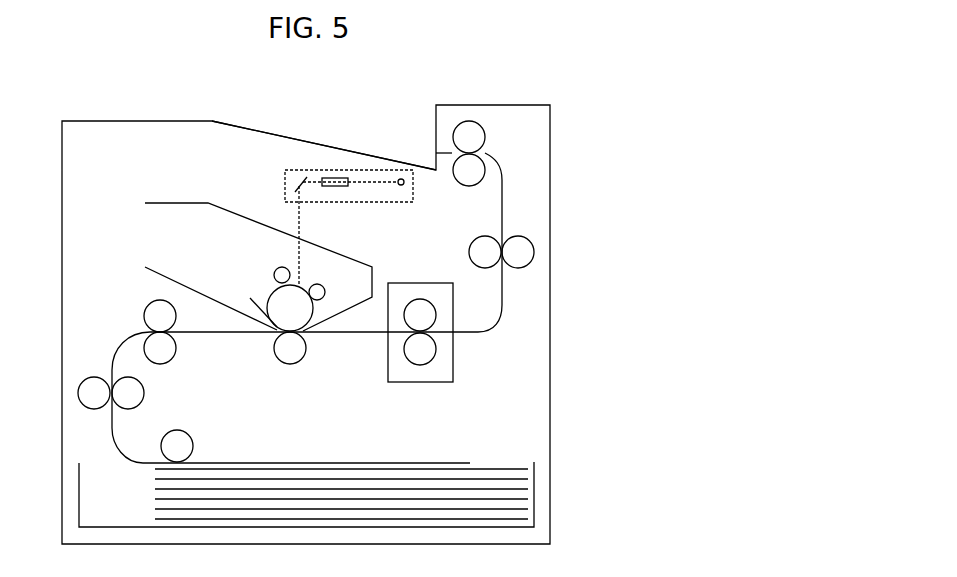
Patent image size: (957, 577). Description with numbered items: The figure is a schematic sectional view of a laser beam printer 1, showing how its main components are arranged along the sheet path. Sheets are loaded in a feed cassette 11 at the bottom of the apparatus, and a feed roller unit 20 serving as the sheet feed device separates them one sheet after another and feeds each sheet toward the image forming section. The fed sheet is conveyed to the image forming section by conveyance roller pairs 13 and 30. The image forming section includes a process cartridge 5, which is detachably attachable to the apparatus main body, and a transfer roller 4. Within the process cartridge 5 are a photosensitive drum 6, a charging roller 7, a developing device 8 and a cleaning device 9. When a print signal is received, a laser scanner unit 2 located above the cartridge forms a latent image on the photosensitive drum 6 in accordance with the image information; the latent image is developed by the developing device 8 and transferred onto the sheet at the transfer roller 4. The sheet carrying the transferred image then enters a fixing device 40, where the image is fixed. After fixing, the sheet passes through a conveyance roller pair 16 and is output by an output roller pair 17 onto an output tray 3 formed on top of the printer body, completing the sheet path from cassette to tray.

The laser beam printer 1 is at (518, 104).
The laser scanner unit 2 is at (285, 178).
The output tray 3 is at (306, 139).
The transfer roller 4 is at (306, 345).
The process cartridge 5 is at (166, 203).
The photosensitive drum 6 is at (268, 300).
The charging roller 7 is at (278, 268).
The developing device 8 is at (320, 287).
The cleaning device 9 is at (252, 322).
The feed cassette 11 is at (534, 500).
The conveyance roller pair 13 is at (92, 404).
The conveyance roller pair 16 is at (487, 237).
The output roller pair 17 is at (487, 138).
The feed roller unit 20 is at (166, 445).
The conveyance roller pair 30 is at (153, 308).
The fixing device 40 is at (418, 283).